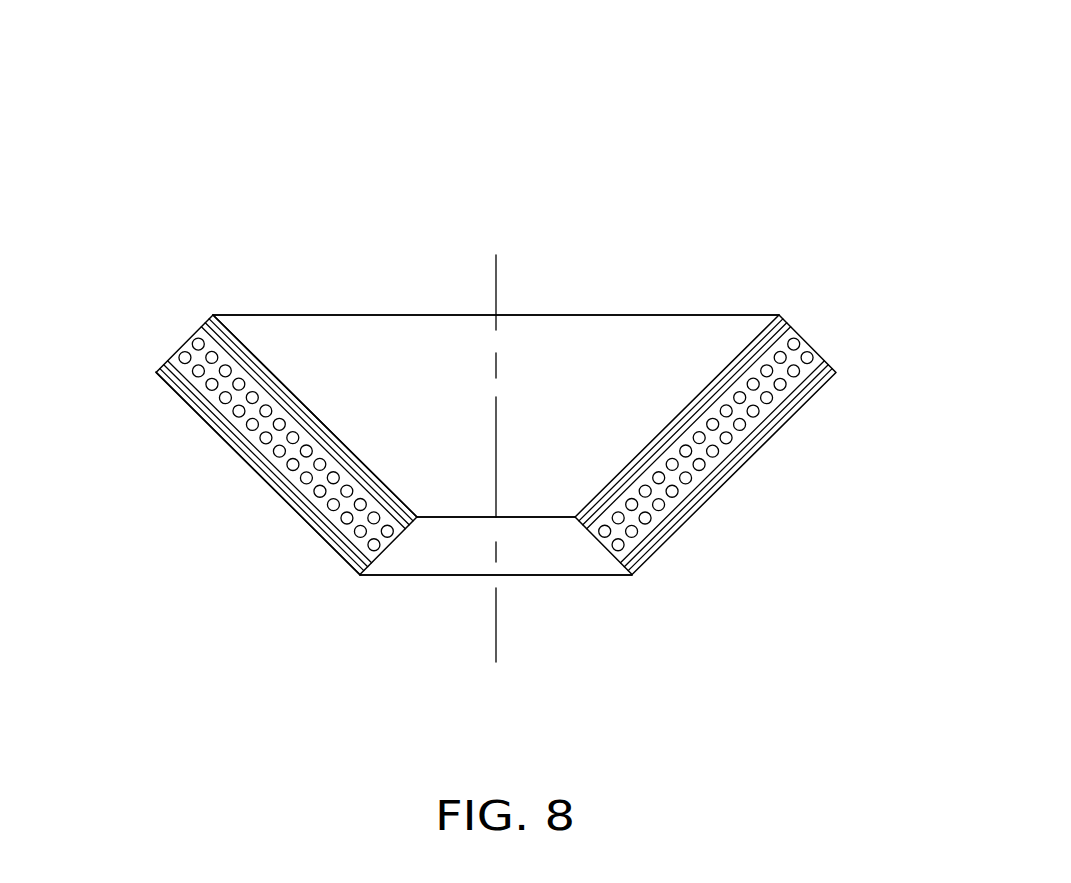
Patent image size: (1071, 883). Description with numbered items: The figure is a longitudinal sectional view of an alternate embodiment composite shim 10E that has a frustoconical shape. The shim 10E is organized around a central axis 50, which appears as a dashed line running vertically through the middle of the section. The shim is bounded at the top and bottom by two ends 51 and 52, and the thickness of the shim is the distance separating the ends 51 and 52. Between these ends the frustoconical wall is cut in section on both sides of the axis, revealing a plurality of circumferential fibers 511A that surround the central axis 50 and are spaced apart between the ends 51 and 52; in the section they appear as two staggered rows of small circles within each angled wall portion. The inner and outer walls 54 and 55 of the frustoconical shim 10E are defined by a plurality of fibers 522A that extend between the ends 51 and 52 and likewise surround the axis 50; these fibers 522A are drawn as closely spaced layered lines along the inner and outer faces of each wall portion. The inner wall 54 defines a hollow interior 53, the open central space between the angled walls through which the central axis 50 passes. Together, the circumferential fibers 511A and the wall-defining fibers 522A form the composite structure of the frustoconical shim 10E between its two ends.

The composite shim 10E is at (619, 144).
The central axis 50 is at (497, 631).
The end 51 is at (399, 577).
The end 52 is at (335, 315).
The hollow interior 53 is at (596, 413).
The inner wall 54 is at (272, 375).
The outer wall 55 is at (188, 403).
The circumferential fibers 511A is at (187, 352).
The fibers 522A is at (317, 520).